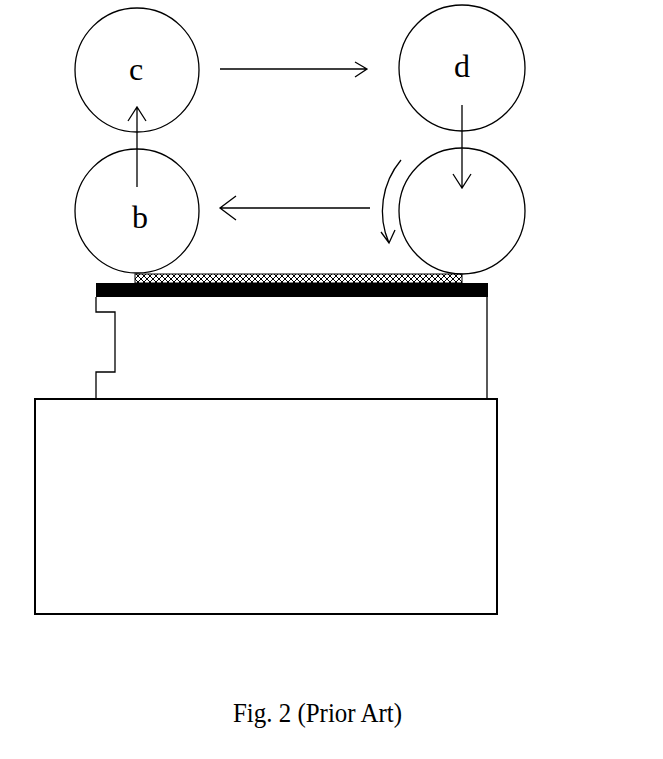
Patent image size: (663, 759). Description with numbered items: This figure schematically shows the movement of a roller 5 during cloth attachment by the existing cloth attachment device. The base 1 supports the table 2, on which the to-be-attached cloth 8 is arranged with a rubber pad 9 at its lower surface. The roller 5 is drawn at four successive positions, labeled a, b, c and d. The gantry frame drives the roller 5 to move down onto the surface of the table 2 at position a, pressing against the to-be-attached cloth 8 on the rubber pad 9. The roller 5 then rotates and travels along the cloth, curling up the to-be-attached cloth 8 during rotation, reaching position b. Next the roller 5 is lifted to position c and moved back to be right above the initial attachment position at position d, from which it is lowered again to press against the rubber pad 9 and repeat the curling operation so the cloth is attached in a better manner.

The base 1 is at (427, 547).
The table 2 is at (137, 381).
The roller 5 is at (503, 230).
The to-be-attached cloth 8 is at (462, 278).
The rubber pad 9 is at (97, 283).